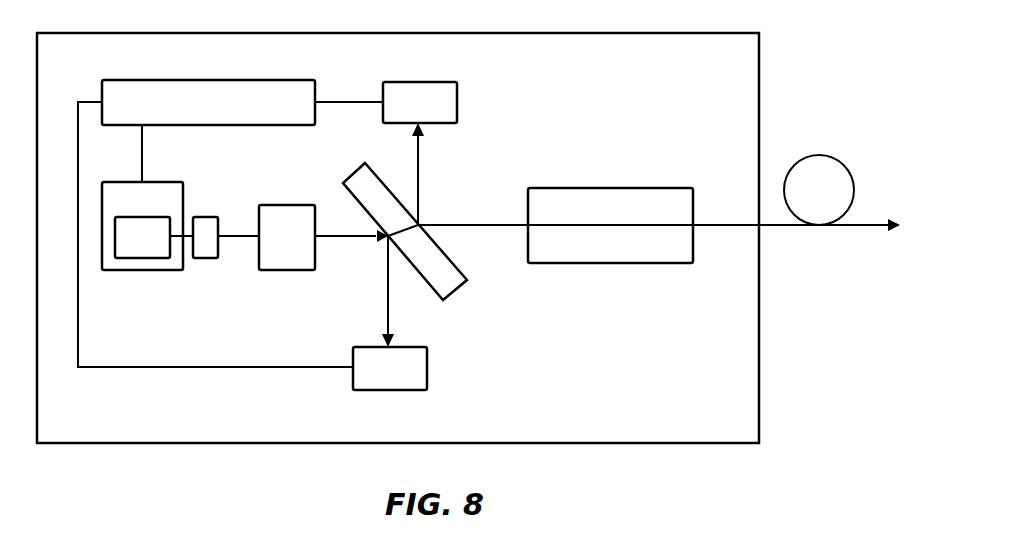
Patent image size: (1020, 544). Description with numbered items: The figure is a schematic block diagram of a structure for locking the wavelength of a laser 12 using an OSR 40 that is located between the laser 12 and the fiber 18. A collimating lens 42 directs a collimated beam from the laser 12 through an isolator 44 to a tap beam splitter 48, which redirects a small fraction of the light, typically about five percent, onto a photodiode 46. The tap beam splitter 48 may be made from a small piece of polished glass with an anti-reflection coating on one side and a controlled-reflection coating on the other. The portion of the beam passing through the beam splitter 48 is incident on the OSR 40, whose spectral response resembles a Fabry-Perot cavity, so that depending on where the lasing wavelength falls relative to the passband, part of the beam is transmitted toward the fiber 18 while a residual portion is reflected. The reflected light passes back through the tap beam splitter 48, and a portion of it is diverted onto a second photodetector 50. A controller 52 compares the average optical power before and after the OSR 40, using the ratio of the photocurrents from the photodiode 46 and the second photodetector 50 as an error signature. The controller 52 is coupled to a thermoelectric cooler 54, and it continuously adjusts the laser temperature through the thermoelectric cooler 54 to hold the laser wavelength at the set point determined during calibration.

The laser 12 is at (142, 237).
The fiber 18 is at (822, 156).
The OSR 40 is at (611, 188).
The collimating lens 42 is at (203, 258).
The isolator 44 is at (285, 205).
The photodiode 46 is at (390, 382).
The tap beam splitter 48 is at (360, 183).
The second photodetector 50 is at (420, 89).
The controller 52 is at (208, 102).
The thermoelectric cooler (TEC) 54 is at (142, 226).